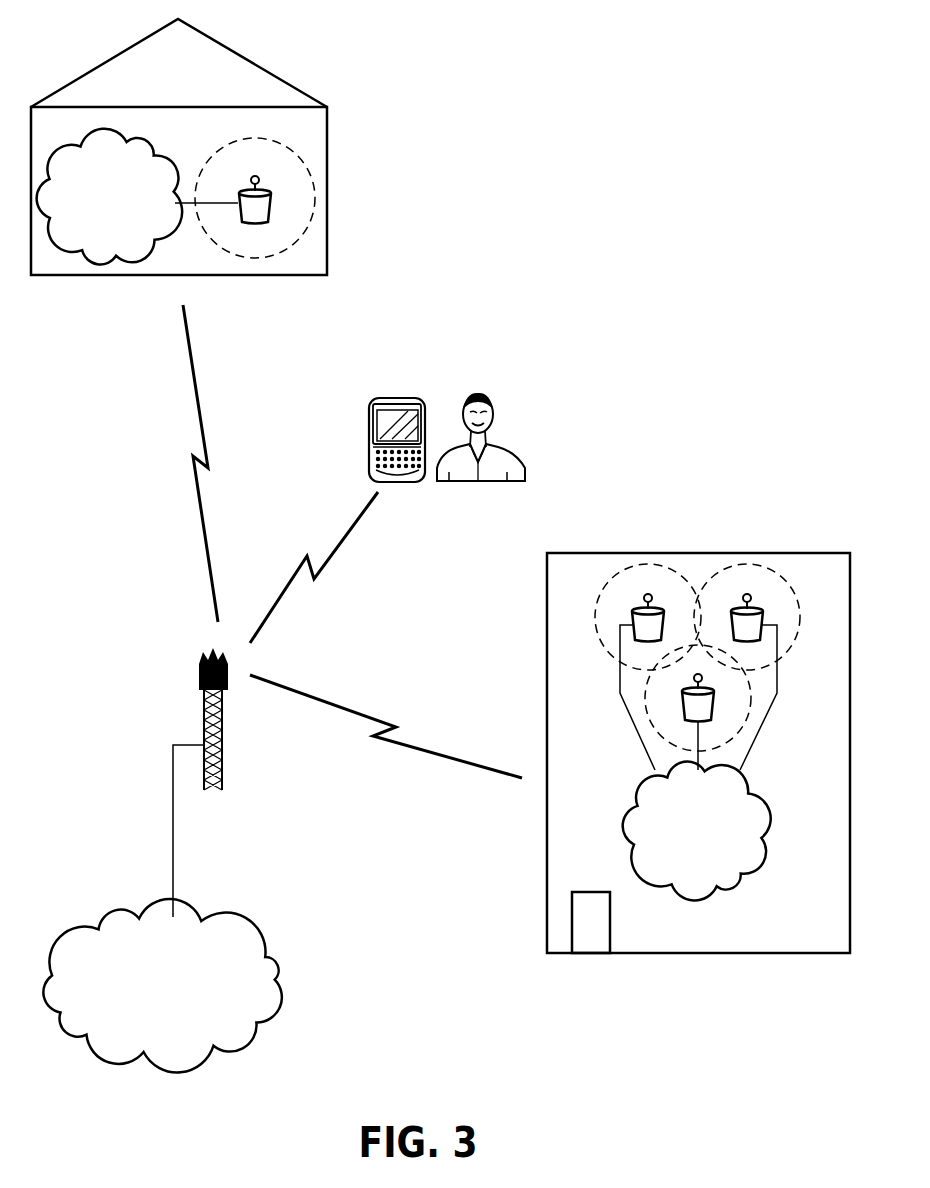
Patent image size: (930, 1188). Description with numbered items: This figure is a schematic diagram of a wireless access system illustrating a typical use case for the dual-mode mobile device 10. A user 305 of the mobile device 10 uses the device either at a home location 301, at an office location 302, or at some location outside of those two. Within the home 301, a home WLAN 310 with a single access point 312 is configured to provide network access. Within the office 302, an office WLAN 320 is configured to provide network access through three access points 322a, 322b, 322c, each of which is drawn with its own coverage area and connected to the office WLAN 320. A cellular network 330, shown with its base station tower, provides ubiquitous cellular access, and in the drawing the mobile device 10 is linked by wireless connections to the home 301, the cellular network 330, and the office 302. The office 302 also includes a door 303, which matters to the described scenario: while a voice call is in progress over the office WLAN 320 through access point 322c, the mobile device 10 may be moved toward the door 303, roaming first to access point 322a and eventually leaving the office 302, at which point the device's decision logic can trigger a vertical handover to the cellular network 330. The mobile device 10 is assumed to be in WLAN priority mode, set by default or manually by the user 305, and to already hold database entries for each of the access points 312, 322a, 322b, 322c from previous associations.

The home location 301 is at (336, 91).
The home WLAN 310 is at (89, 234).
The access point 312 is at (269, 205).
The mobile device 10 is at (399, 398).
The user 305 is at (507, 428).
The office location 302 is at (516, 671).
The access point 322a is at (636, 618).
The access point 322b is at (705, 708).
The access point 322c is at (758, 618).
The office WLAN 320 is at (678, 868).
The door 303 is at (610, 927).
The cellular network 330 is at (182, 1010).